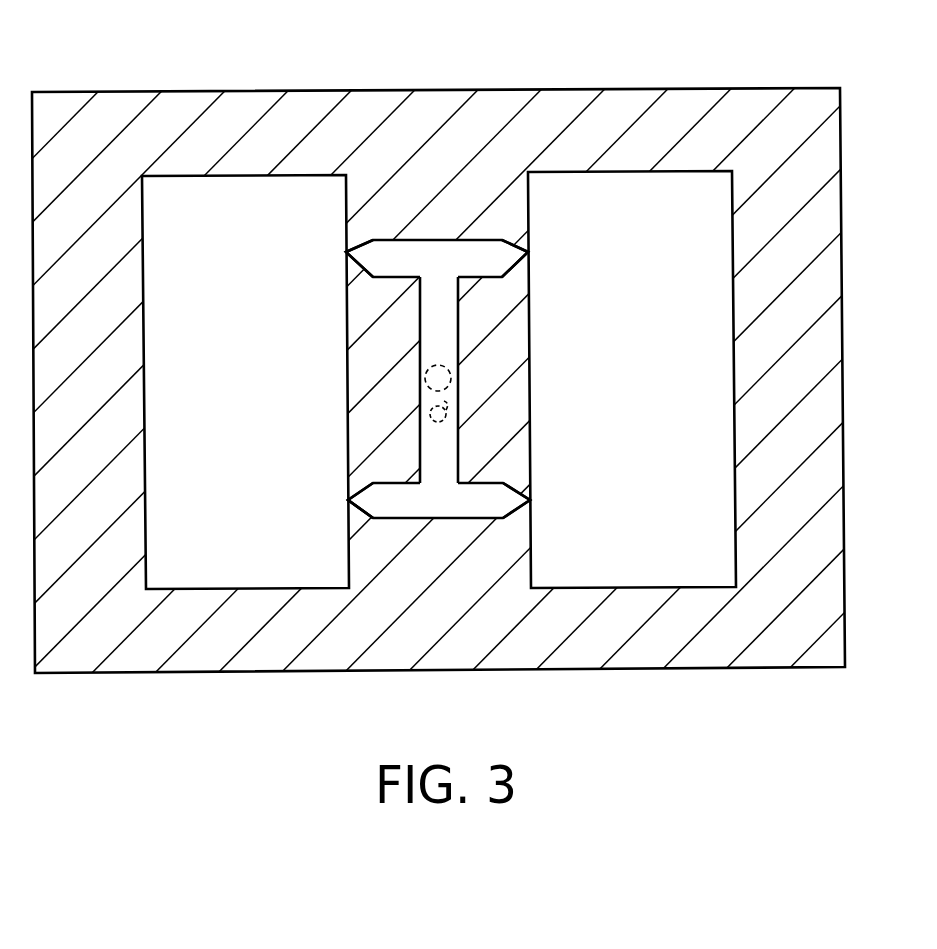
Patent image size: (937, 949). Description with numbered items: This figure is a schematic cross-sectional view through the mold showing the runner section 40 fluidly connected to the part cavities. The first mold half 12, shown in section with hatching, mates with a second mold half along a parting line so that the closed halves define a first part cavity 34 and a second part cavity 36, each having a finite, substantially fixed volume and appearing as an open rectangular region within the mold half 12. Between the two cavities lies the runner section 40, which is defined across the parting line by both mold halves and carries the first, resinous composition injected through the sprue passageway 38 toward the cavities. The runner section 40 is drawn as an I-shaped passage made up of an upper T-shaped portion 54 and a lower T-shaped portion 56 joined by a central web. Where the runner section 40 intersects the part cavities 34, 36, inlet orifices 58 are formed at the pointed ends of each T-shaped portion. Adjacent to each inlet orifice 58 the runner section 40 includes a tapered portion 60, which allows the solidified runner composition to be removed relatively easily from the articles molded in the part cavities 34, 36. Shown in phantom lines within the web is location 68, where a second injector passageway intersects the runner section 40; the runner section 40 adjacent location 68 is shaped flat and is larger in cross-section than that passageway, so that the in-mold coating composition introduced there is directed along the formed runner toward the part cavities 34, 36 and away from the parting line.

The first mold half 12 is at (740, 108).
The first part cavity 34 is at (646, 322).
The second part cavity 36 is at (260, 324).
The sprue passageway 38 is at (438, 366).
The runner section 40 is at (445, 456).
The upper T-shaped portion 54 is at (388, 258).
The lower T-shaped portion 56 is at (473, 507).
The inlet orifice 58 is at (346, 253).
The tapered portion 60 is at (349, 527).
The location 68 is at (447, 403).